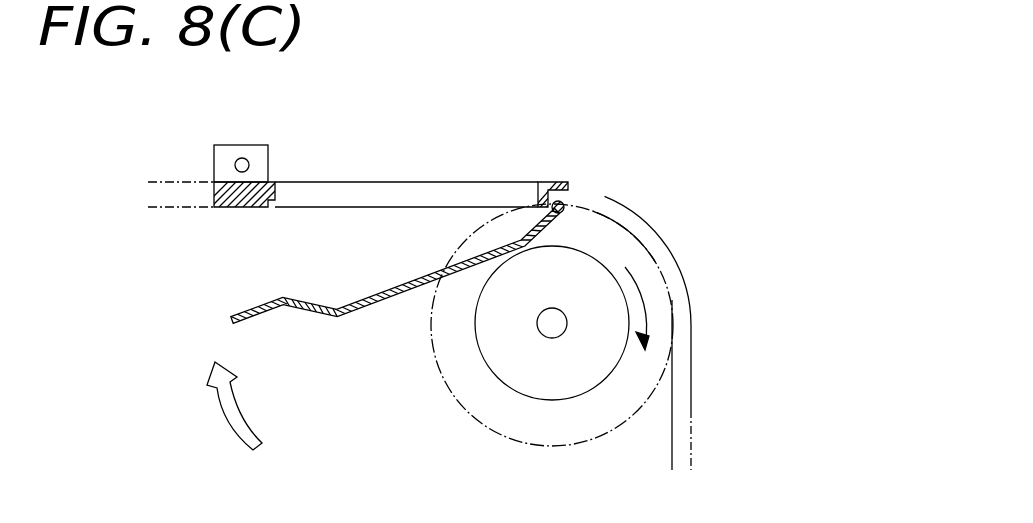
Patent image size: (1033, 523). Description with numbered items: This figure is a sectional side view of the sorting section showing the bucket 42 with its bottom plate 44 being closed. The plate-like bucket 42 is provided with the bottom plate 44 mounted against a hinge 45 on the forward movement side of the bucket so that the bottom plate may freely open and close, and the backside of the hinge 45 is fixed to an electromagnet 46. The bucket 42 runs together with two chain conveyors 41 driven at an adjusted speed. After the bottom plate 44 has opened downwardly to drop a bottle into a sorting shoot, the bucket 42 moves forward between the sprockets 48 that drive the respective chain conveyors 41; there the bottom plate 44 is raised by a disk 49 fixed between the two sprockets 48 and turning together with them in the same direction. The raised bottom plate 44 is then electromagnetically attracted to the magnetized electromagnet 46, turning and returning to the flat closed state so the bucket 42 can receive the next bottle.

The chain conveyor 41 is at (687, 408).
The bucket 42 is at (350, 182).
The bottom plate 44 is at (357, 318).
The hinge 45 is at (565, 203).
The electromagnet 46 is at (213, 196).
The sprocket 48 is at (533, 432).
The disk 49 is at (603, 262).